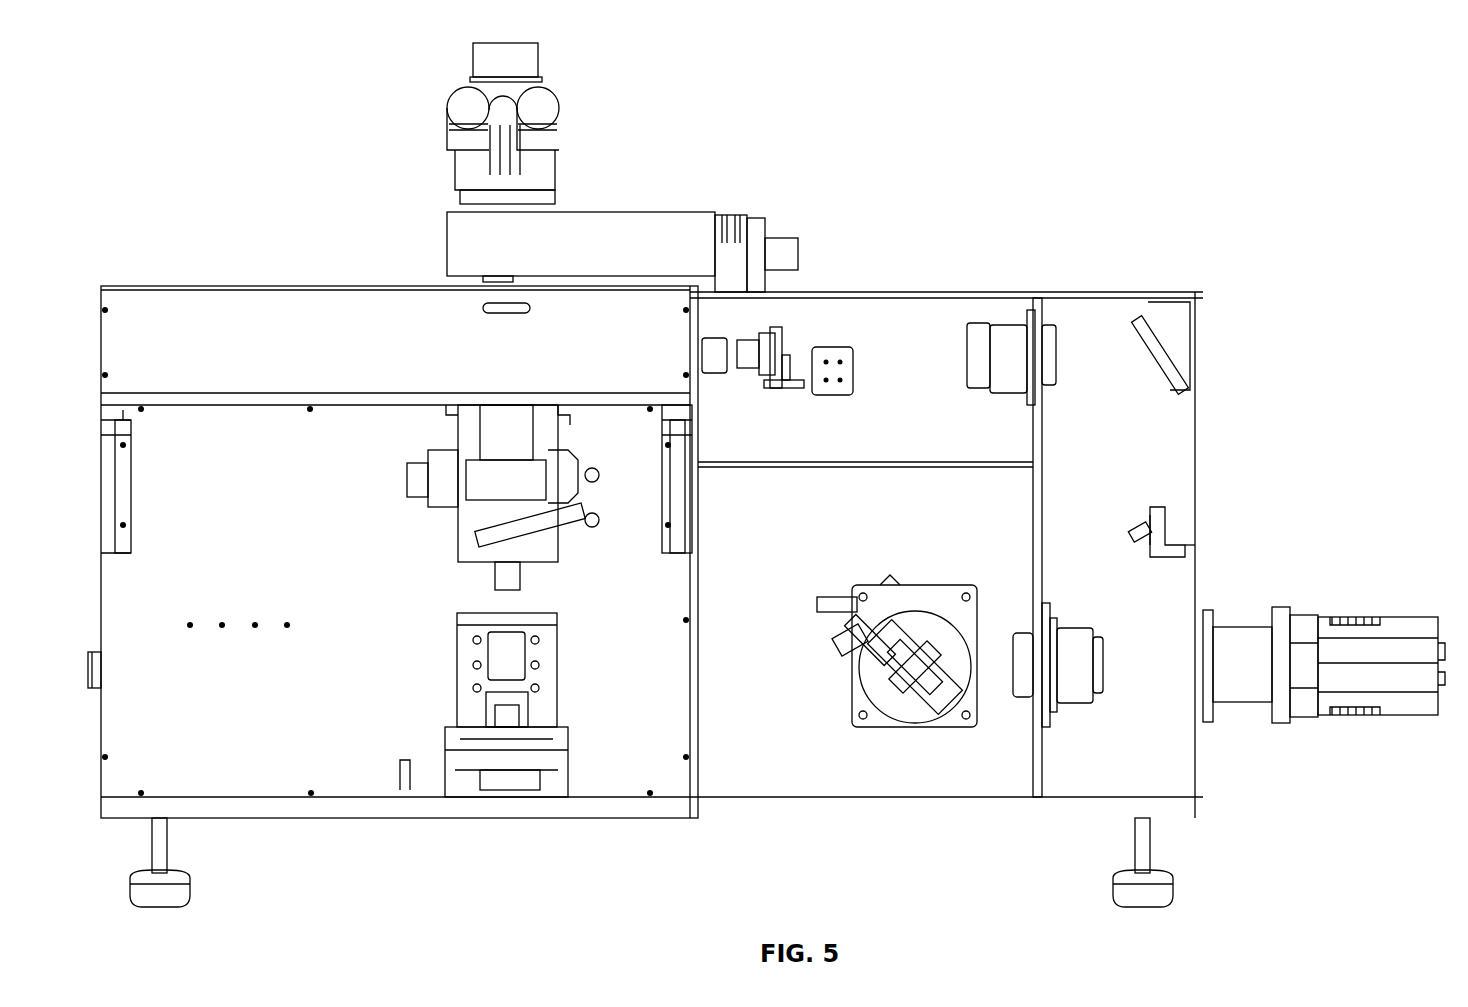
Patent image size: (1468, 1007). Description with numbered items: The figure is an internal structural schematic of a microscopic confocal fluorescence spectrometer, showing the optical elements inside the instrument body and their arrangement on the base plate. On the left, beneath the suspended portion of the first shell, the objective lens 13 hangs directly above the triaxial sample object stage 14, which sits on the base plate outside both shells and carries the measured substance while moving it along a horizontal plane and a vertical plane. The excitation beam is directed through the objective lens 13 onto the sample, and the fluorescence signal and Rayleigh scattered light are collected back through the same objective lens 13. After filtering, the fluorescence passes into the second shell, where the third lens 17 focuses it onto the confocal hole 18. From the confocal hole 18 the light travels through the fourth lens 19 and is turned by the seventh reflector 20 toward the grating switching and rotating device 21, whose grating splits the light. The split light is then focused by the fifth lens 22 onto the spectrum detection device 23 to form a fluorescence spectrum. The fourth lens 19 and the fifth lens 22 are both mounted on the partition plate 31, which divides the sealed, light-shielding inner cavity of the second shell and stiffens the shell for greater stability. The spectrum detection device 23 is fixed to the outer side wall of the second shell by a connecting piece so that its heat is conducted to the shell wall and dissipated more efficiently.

The objective lens 13 is at (510, 563).
The triaxial sample object stage 14 is at (490, 725).
The third lens 17 is at (720, 340).
The confocal hole 18 is at (777, 358).
The fourth lens 19 is at (990, 330).
The seventh reflector 20 is at (1160, 335).
The grating switching and rotating device 21 is at (910, 690).
The fifth lens 22 is at (1080, 683).
The spectrum detection device 23 is at (1327, 650).
The partition plate 31 is at (1033, 567).